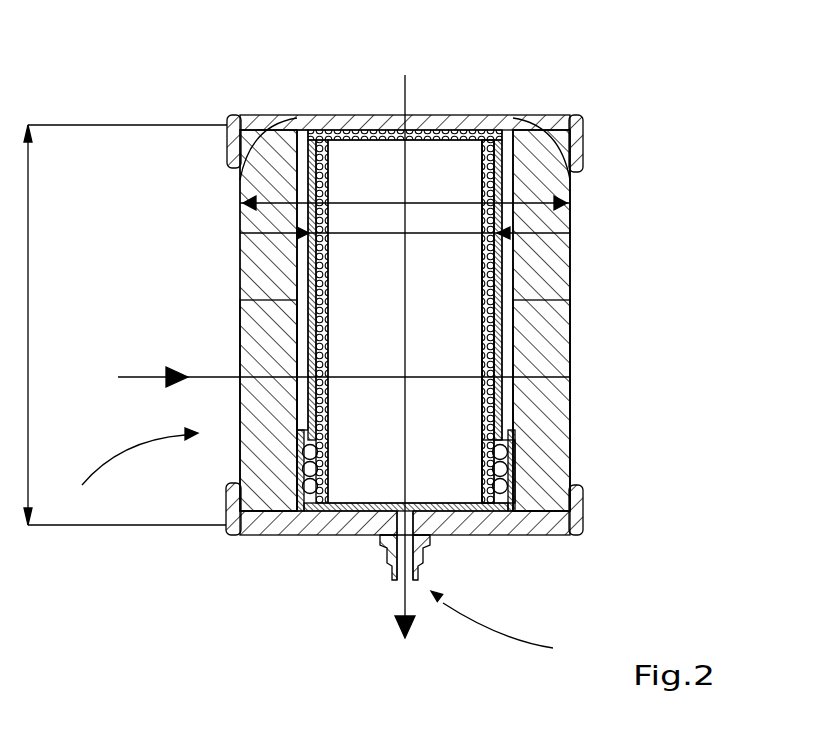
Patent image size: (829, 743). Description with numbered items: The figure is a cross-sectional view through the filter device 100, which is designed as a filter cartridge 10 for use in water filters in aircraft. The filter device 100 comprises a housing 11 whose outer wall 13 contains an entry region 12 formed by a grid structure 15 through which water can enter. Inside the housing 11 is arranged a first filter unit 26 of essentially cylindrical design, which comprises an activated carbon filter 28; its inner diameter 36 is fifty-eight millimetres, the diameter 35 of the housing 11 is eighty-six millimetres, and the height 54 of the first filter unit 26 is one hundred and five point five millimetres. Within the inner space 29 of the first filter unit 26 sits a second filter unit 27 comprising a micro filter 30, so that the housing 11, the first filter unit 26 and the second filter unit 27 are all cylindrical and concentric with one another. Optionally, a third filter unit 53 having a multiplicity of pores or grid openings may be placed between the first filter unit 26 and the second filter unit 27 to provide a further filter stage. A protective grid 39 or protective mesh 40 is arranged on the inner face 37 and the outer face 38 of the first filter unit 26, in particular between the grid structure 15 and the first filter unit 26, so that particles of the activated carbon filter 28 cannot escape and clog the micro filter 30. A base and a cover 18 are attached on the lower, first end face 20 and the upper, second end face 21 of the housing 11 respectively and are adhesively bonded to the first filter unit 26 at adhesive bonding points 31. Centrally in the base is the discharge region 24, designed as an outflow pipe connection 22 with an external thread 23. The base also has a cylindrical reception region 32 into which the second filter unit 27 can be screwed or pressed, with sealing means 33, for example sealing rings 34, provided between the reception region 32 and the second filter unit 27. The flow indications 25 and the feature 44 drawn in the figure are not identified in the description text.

The filter device 100 is at (732, 86).
The filter cartridge 10 is at (240, 190).
The housing 11 is at (240, 206).
The entry region 12 is at (137, 471).
The outer wall 13 is at (238, 403).
The grid structure 15 is at (585, 374).
The cover 18 is at (260, 117).
The first end face 20 is at (286, 565).
The second end face 21 is at (452, 92).
The outflow pipe connection 22 is at (378, 550).
The external thread 23 is at (430, 550).
The discharge region 24 is at (507, 625).
The flow path 25 is at (153, 375).
The first filter unit 26 is at (515, 240).
The second filter unit 27 is at (520, 288).
The activated carbon filter 28 is at (530, 198).
The inner space 29 is at (302, 152).
The micro filter 30 is at (518, 118).
The adhesive bonding points 31 is at (228, 152).
The reception region 32 is at (513, 468).
The sealing means 33 is at (513, 447).
The sealing rings 34 is at (513, 453).
The diameter 35 is at (370, 202).
The inner diameter 36 is at (572, 243).
The inner face 37 is at (545, 372).
The outer face 38 is at (240, 233).
The protective grid 39 is at (540, 318).
The protective mesh 40 is at (572, 290).
The housing wall outer diameter 44 is at (240, 343).
The third filter unit 53 is at (567, 117).
The height 54 is at (28, 170).